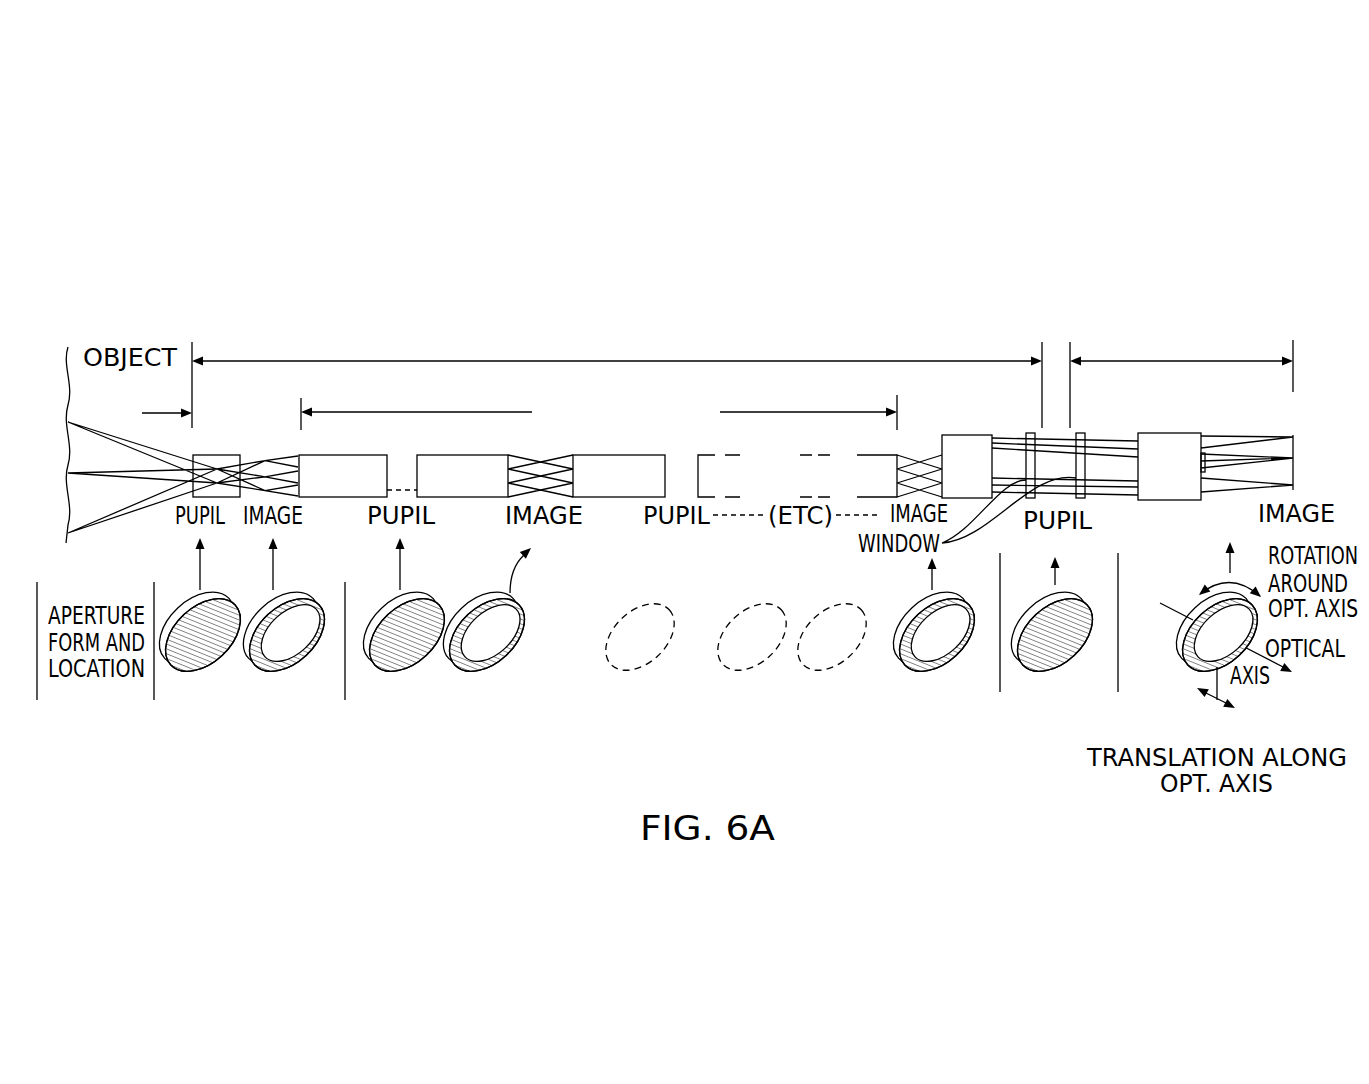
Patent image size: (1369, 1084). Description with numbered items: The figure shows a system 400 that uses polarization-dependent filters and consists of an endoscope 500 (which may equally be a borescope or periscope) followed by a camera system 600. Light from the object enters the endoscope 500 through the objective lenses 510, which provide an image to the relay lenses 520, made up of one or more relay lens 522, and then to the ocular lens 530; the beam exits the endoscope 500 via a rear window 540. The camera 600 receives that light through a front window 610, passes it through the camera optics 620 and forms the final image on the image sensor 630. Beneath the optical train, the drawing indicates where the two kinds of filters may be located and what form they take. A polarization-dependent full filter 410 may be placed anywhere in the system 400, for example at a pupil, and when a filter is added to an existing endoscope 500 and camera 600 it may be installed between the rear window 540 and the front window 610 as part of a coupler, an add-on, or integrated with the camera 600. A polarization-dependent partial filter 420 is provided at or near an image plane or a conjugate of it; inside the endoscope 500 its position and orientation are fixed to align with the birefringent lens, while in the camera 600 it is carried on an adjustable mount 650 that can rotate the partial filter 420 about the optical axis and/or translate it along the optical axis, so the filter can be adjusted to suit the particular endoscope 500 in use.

The system 400 is at (686, 189).
The endoscope 500 is at (641, 312).
The objective lenses 510 is at (246, 392).
The relay lenses 520 is at (622, 397).
The relay lens 522 is at (355, 480).
The ocular lens 530 is at (965, 408).
The rear window 540 is at (1031, 432).
The camera system 600 is at (1198, 308).
The front window 610 is at (1078, 432).
The camera optics 620 is at (1168, 432).
The image sensor 630 is at (1295, 435).
The polarization-dependent full filter 410 is at (188, 673).
The polarization-dependent partial filter 420 is at (273, 673).
The adjustable mount 650 is at (1233, 707).